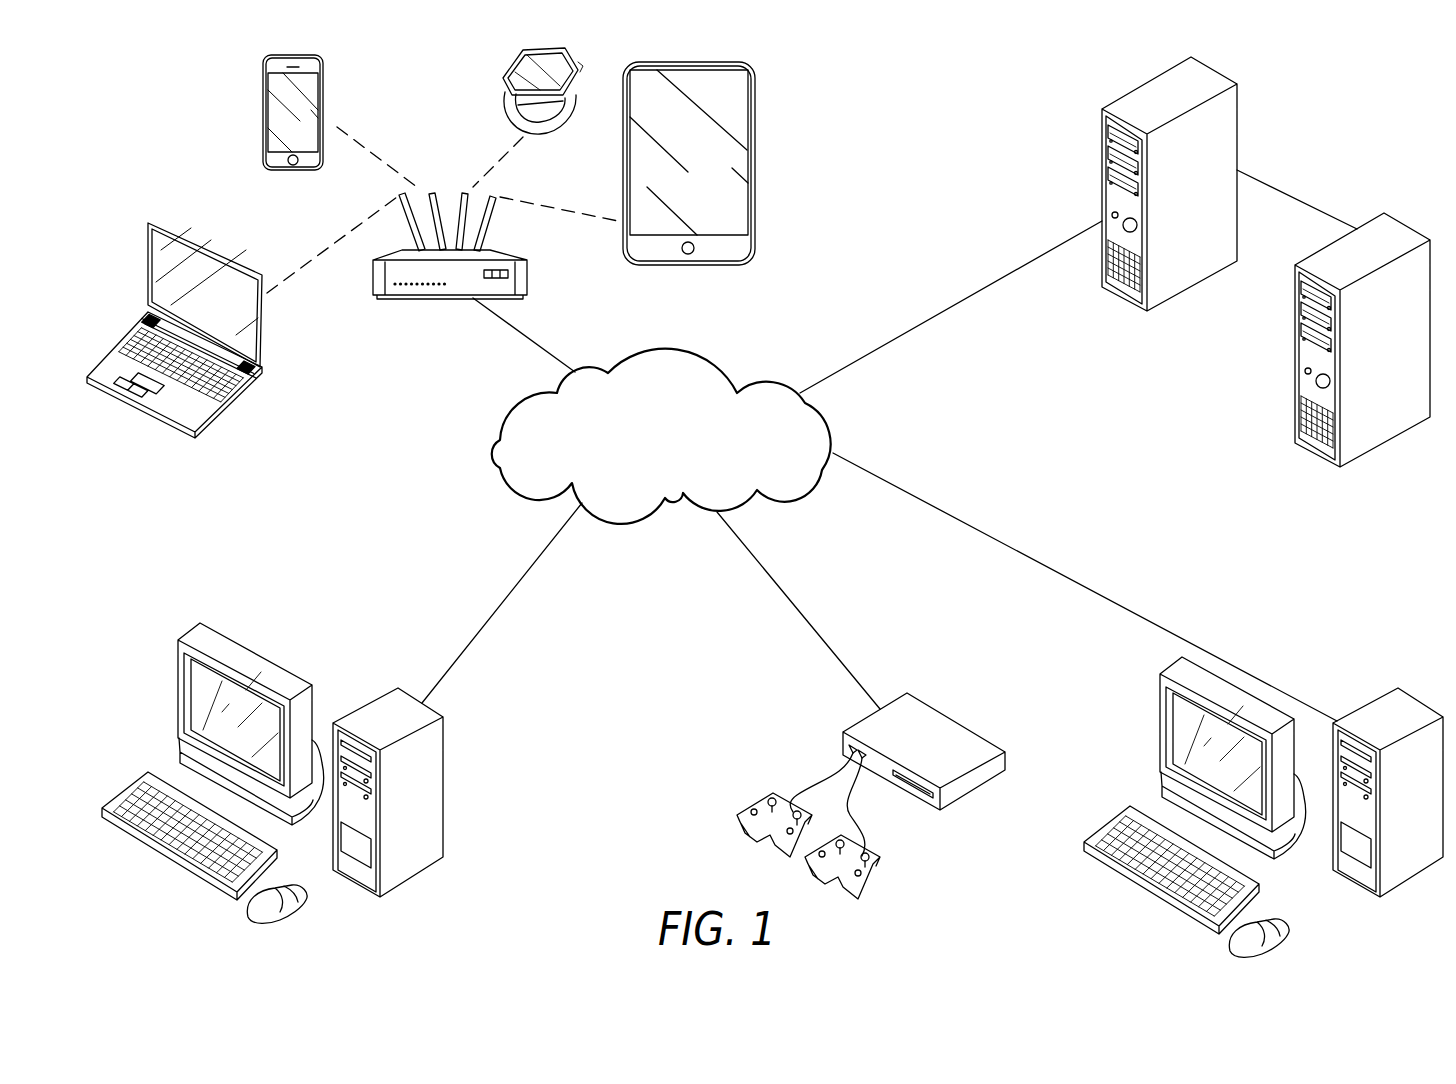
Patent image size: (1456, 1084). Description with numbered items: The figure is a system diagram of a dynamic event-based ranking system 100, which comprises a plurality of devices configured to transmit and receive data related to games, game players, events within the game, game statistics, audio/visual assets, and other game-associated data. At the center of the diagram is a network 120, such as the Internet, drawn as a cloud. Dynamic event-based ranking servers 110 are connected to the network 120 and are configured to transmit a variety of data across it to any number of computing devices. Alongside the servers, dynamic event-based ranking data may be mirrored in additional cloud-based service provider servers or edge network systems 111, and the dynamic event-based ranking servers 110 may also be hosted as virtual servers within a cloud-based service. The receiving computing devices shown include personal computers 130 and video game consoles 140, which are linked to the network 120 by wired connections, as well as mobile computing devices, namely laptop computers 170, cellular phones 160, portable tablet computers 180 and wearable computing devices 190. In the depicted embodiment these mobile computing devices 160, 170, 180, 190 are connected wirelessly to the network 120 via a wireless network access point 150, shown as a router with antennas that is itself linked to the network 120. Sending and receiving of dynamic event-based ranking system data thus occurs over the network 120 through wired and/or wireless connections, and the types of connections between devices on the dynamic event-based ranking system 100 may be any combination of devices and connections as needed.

The dynamic event-based ranking system 100 is at (605, 803).
The dynamic event-based ranking servers 110 is at (1134, 94).
The cloud-based service provider servers or edge network systems 111 is at (1416, 226).
The network 120 is at (690, 352).
The personal computers 130 is at (178, 630).
The video game consoles 140 is at (842, 738).
The wireless network access point 150 is at (423, 299).
The cellular phones 160 is at (263, 112).
The laptop computers 170 is at (148, 268).
The portable tablet computers 180 is at (755, 163).
The wearable computing devices 190 is at (503, 87).